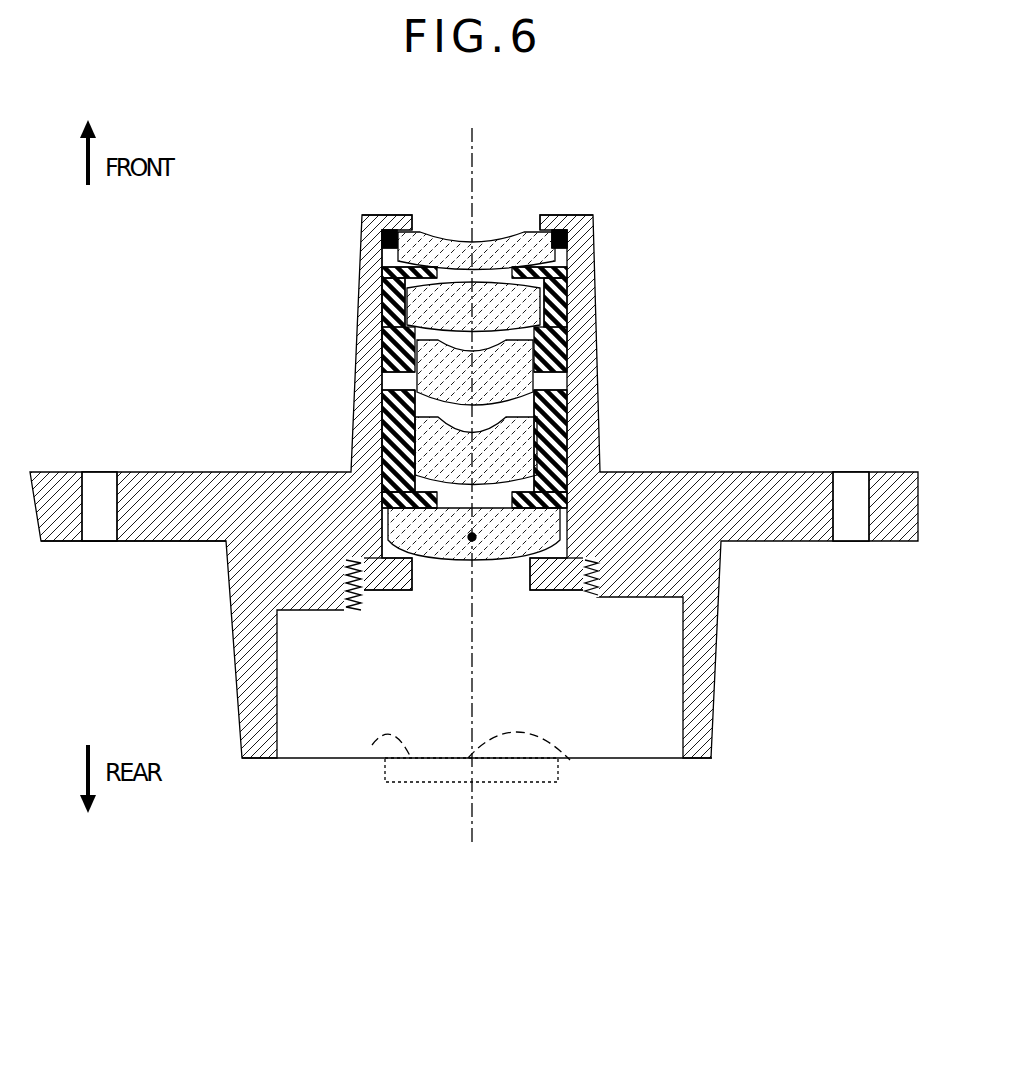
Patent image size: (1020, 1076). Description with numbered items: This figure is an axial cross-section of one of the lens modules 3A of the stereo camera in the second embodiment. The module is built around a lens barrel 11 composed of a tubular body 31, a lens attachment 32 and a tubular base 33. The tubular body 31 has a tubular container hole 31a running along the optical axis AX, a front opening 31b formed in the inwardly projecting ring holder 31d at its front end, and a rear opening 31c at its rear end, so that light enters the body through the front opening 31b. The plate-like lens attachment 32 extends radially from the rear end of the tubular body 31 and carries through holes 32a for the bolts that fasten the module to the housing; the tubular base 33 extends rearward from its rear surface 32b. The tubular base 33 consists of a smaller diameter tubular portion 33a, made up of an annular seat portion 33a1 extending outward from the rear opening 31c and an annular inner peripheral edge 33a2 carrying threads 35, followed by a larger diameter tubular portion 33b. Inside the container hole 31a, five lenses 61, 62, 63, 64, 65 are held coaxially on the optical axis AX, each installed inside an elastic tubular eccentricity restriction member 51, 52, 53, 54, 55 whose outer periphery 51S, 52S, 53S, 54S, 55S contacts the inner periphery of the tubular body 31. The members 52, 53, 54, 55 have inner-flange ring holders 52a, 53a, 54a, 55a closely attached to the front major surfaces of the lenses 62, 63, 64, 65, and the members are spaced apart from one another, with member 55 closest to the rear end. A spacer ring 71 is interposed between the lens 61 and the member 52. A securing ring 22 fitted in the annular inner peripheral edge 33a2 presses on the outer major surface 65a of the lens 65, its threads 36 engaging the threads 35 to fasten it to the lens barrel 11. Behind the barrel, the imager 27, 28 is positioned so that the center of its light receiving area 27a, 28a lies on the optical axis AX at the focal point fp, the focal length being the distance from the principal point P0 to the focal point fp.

The lens module 3A is at (616, 185).
The lens barrel 11 is at (334, 325).
The securing ring 22 is at (345, 567).
The imager 27 is at (570, 760).
The imager 28 is at (519, 746).
The light receiving area 27a is at (372, 746).
The light receiving area 28a is at (391, 746).
The tubular body 31 is at (365, 382).
The tubular container hole 31a is at (382, 318).
The front opening 31b is at (488, 215).
The rear opening 31c is at (498, 565).
The ring holder 31d is at (370, 213).
The lens attachment 32 is at (193, 470).
The through hole 32a is at (106, 470).
The rear surface 32b is at (130, 546).
The tubular base 33 is at (810, 563).
The smaller diameter tubular portion 33a is at (672, 575).
The annular seat portion 33a1 is at (662, 472).
The annular inner peripheral edge 33a2 is at (688, 548).
The larger diameter tubular portion 33b is at (698, 668).
The threads 35 is at (594, 598).
The threads 36 is at (570, 594).
The eccentricity restriction member 51 is at (596, 224).
The outer periphery 51S is at (568, 240).
The eccentricity restriction member 52 is at (596, 282).
The ring holder 52a is at (396, 264).
The outer periphery 52S is at (596, 278).
The eccentricity restriction member 53 is at (596, 338).
The ring holder 53a is at (596, 303).
The outer periphery 53S is at (598, 330).
The eccentricity restriction member 54 is at (598, 410).
The ring holder 54a is at (598, 372).
The outer periphery 54S is at (598, 410).
The eccentricity restriction member 55 is at (598, 484).
The ring holder 55a is at (598, 448).
The outer periphery 55S is at (598, 492).
The lens 61 is at (405, 240).
The lens 62 is at (405, 290).
The lens 63 is at (456, 343).
The lens 64 is at (415, 430).
The lens 65 is at (386, 476).
The outer major surface 65a is at (468, 562).
The spacer ring 71 is at (596, 250).
The optical axis AX is at (466, 140).
The principal point P0 is at (468, 542).
The focal point fp is at (582, 766).